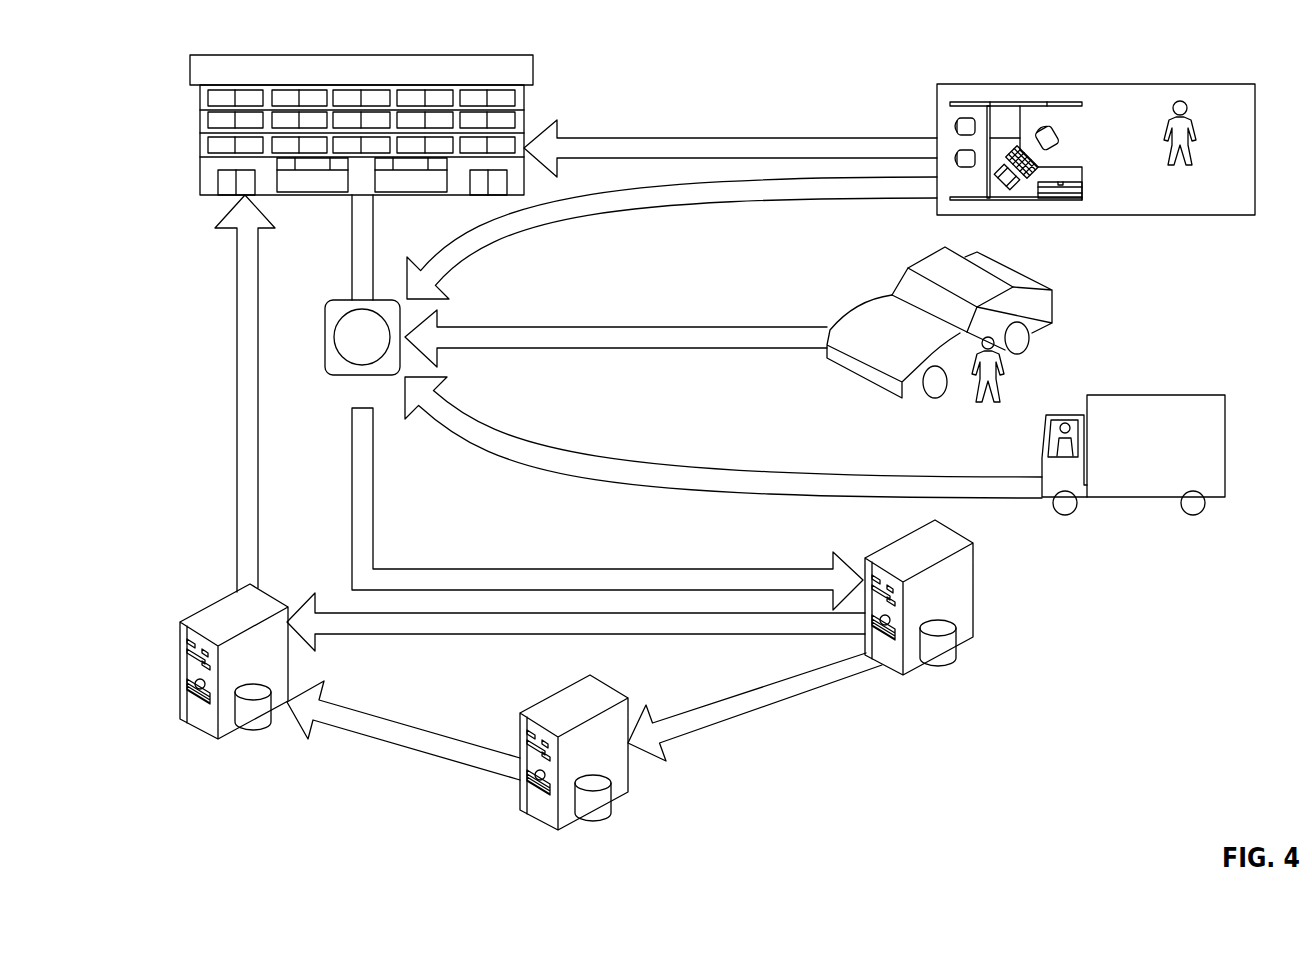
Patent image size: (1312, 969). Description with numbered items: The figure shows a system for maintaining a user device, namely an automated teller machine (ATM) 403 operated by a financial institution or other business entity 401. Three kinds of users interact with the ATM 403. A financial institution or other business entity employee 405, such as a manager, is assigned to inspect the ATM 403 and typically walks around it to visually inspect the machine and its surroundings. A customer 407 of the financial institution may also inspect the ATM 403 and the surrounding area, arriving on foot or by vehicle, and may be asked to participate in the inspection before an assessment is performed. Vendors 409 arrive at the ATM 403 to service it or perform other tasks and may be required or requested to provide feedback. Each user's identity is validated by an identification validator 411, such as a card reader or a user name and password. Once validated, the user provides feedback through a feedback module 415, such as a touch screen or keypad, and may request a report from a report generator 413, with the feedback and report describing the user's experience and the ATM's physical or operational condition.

The financial institution or other business entity 401 is at (533, 68).
The automated teller machine (ATM) 403 is at (330, 300).
The financial institution or other business entity employee 405 is at (937, 113).
The customer 407 is at (1053, 305).
The vendor 409 is at (1227, 447).
The identification validator 411 is at (974, 590).
The report generator 413 is at (613, 808).
The feedback module 415 is at (213, 601).